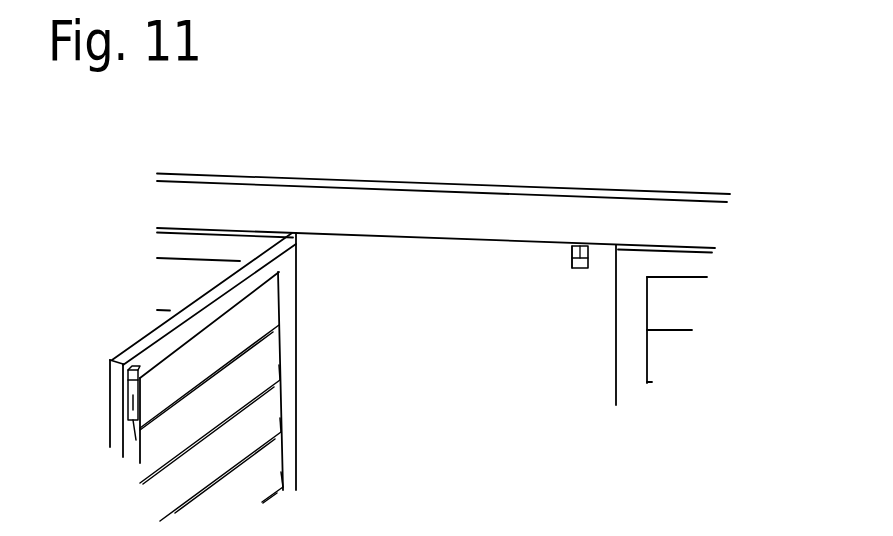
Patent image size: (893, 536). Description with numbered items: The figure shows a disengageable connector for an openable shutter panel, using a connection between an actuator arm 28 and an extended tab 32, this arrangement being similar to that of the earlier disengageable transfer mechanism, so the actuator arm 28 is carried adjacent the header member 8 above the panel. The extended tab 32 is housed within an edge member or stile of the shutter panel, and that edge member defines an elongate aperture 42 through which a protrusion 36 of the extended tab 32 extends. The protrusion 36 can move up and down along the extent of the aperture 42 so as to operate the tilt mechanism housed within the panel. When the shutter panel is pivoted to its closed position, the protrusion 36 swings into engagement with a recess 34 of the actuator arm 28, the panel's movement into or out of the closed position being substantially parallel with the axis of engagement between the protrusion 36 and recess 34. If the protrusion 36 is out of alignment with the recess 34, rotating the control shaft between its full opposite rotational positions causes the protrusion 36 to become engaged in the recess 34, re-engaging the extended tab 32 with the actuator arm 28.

The header beam 8 is at (486, 216).
The actuator arm 28 is at (572, 251).
The recess 34 is at (580, 250).
The protrusion 36 is at (121, 360).
The extended tab 32 is at (130, 405).
The elongate aperture 42 is at (135, 422).